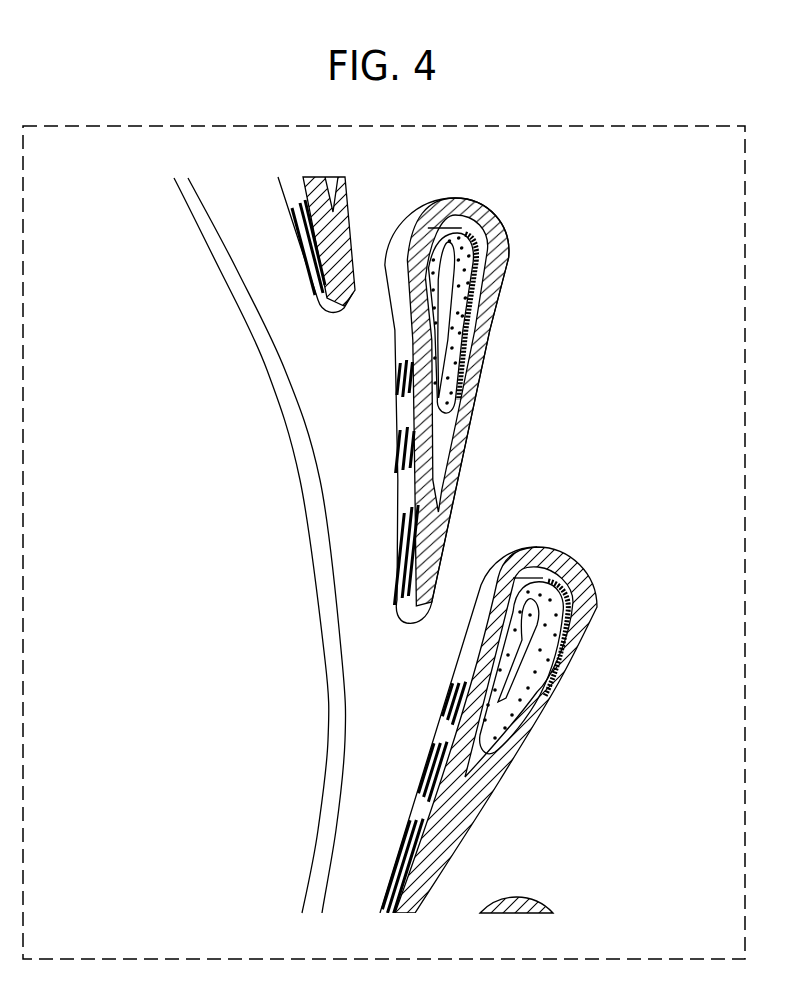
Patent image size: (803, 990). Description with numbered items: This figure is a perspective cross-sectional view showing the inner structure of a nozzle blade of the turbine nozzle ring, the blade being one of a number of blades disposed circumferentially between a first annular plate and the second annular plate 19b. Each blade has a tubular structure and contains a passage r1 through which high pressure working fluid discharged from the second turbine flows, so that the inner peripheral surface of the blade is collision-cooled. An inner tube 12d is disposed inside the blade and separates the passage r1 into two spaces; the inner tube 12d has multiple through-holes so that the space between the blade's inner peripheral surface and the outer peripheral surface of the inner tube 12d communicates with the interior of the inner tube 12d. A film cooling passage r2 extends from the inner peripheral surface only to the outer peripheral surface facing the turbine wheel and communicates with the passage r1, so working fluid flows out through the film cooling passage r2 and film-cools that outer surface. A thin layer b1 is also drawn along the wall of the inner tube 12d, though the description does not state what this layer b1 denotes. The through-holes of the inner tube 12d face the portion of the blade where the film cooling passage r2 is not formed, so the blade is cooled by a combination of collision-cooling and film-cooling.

The inner tube 12d is at (462, 328).
The bonding layer b1 is at (468, 294).
The passage r1 is at (480, 270).
The film cooling passage r2 is at (384, 459).
The second annular plate 19b is at (243, 202).